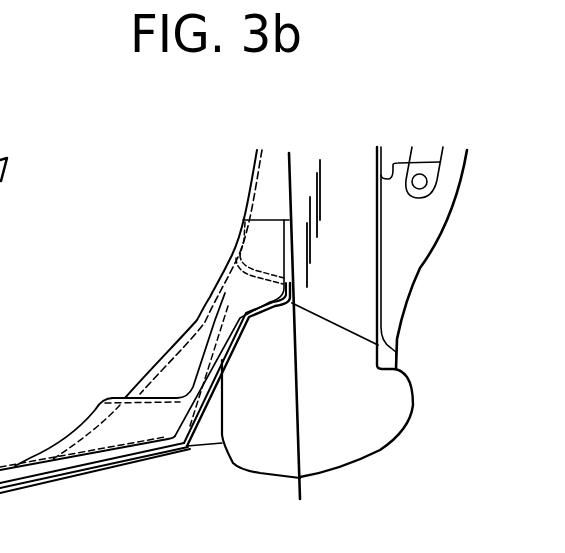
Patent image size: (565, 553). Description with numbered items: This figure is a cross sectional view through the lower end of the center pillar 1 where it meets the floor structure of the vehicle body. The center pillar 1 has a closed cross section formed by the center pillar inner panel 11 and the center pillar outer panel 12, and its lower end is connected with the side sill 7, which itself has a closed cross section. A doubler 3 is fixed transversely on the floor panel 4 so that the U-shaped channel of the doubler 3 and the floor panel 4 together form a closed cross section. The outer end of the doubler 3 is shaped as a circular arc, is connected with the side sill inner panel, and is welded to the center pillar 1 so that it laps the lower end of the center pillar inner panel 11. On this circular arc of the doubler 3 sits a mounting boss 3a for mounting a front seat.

The center pillar 1 is at (248, 190).
The center pillar inner panel 11 is at (270, 173).
The center pillar outer panel 12 is at (362, 225).
The doubler 3 is at (0, 440).
The mounting boss 3a is at (157, 397).
The floor panel 4 is at (201, 445).
The side sill 7 is at (414, 395).